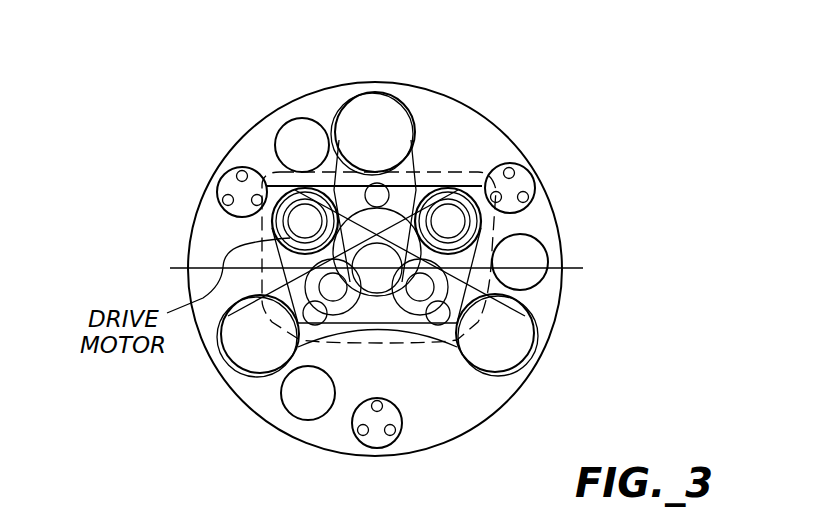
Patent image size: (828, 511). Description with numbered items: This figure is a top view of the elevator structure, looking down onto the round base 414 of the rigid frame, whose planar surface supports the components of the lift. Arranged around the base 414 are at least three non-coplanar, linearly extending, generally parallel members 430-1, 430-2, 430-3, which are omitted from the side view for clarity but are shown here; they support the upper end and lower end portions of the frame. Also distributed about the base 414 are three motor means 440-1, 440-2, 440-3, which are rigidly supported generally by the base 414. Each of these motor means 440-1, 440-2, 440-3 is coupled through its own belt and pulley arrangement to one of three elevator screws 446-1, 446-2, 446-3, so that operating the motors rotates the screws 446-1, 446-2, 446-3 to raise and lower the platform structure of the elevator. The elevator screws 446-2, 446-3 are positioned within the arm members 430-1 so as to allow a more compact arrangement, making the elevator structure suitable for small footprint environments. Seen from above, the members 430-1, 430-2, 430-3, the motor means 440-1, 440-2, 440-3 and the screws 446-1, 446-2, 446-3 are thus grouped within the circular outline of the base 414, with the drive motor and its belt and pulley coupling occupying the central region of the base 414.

The base 414 is at (490, 393).
The linearly extending member 430-1 is at (381, 449).
The linearly extending member 430-2 is at (536, 188).
The linearly extending member 430-3 is at (217, 193).
The motor means 440-1 is at (545, 248).
The motor means 440-2 is at (306, 420).
The motor means 440-3 is at (283, 124).
The elevator screw 446-1 is at (535, 325).
The elevator screw 446-2 is at (240, 376).
The elevator screw 446-3 is at (385, 103).